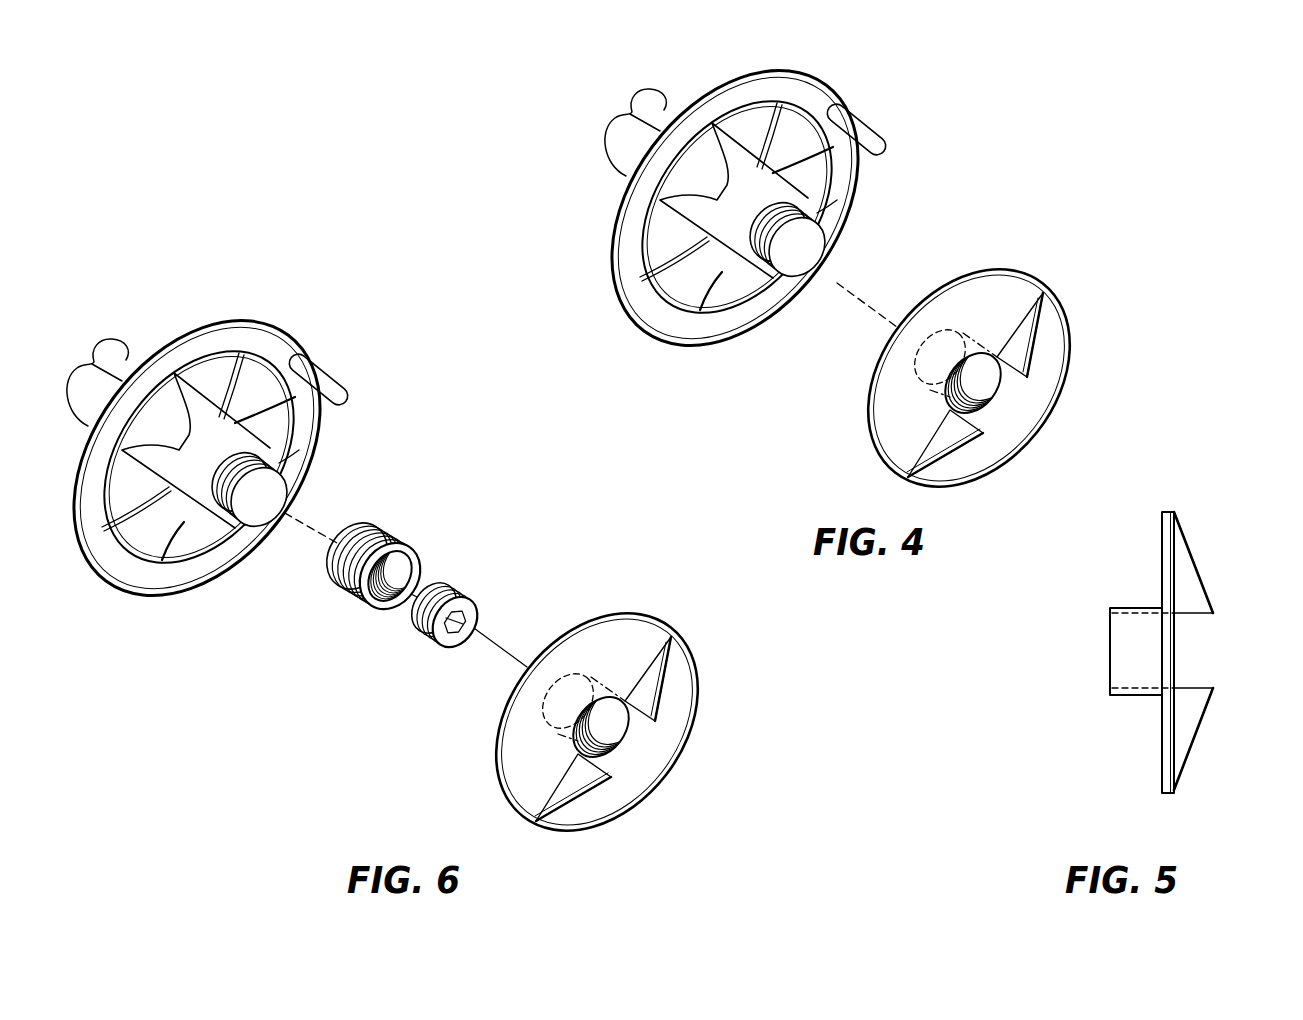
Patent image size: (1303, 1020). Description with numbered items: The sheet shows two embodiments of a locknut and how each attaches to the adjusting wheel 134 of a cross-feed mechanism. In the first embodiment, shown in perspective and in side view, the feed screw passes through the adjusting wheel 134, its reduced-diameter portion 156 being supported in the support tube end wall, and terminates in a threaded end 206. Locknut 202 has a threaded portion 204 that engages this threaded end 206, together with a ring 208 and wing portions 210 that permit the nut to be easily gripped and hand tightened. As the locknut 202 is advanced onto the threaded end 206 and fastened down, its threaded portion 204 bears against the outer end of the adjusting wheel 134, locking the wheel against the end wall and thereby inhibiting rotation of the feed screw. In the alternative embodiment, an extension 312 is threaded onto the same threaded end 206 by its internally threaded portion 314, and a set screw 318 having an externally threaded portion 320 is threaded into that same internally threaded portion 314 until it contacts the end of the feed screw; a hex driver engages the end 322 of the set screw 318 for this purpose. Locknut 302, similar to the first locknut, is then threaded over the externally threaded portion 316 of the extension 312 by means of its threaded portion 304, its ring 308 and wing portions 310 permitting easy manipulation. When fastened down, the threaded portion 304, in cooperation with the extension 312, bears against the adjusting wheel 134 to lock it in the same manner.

In FIG. 4, the adjusting wheel 134 is at (820, 92).
In FIG. 6, the adjusting wheel 134 is at (253, 335).
In FIG. 4, the reduced-diameter portion 156 is at (681, 107).
In FIG. 6, the reduced-diameter portion 156 is at (139, 363).
In FIG. 4, the locknut 202 is at (985, 372).
In FIG. 5, the locknut 202 is at (1167, 623).
In FIG. 4, the threaded portion 204 is at (975, 395).
In FIG. 5, the threaded portion 204 is at (1129, 638).
In FIG. 4, the threaded end 206 is at (763, 277).
In FIG. 6, the threaded end 206 is at (216, 510).
In FIG. 4, the ring 208 is at (1047, 377).
In FIG. 5, the ring 208 is at (1165, 765).
In FIG. 4, the wing portions 210 is at (1023, 338).
In FIG. 5, the wing portions 210 is at (1193, 590).
In FIG. 6, the locknut 302 is at (608, 719).
In FIG. 6, the threaded portion 304 is at (610, 725).
In FIG. 6, the ring 308 is at (680, 687).
In FIG. 6, the wing portions 310 is at (653, 670).
In FIG. 6, the extension 312 is at (411, 574).
In FIG. 6, the internally threaded portion 314 is at (400, 567).
In FIG. 6, the externally threaded portion 316 is at (350, 585).
In FIG. 6, the set screw 318 is at (488, 626).
In FIG. 6, the externally threaded portion 320 is at (430, 637).
In FIG. 6, the end 322 is at (463, 622).